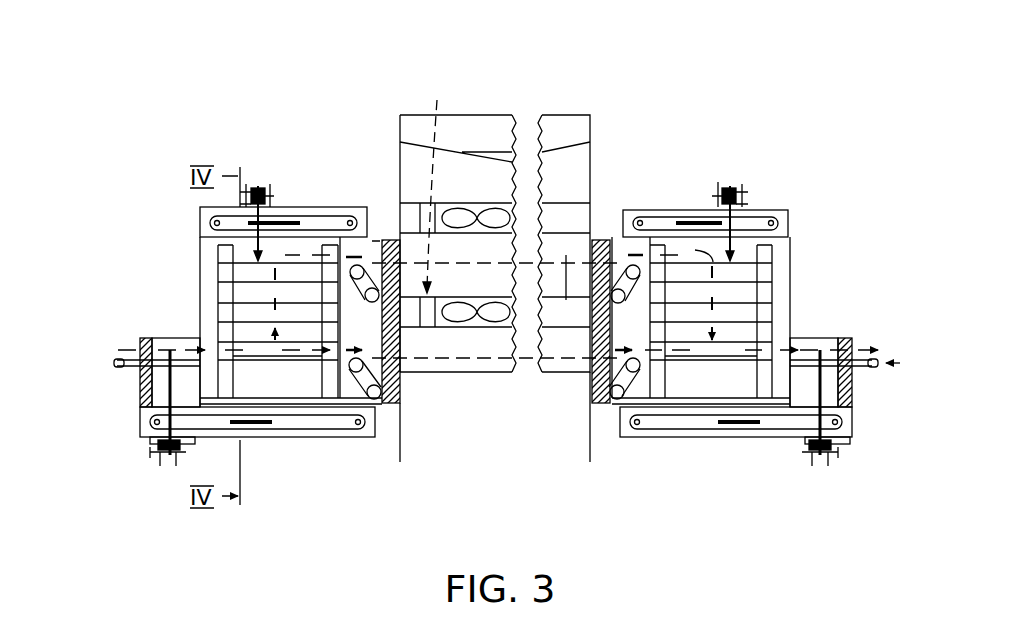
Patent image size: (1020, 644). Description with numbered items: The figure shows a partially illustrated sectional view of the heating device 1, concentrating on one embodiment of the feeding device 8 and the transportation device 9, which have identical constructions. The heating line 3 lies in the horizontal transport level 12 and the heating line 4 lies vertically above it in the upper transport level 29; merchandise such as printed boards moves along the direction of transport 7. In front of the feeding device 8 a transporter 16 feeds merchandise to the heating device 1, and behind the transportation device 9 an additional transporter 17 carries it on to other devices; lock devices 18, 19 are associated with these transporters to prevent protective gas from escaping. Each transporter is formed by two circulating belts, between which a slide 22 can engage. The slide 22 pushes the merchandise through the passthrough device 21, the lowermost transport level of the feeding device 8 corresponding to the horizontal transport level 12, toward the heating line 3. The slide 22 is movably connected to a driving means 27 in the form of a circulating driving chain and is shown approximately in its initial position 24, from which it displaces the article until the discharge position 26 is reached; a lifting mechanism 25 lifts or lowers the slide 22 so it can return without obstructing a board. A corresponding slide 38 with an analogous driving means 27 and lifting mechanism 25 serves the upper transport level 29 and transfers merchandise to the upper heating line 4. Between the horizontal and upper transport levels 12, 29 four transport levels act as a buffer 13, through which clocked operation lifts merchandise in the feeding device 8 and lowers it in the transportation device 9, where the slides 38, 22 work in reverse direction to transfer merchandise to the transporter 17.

The heating device 1 is at (541, 70).
The heating line 3 is at (565, 352).
The heating line 4 is at (566, 256).
The direction of transport 7 is at (200, 350).
The feeding device 8 is at (254, 132).
The transportation device 9 is at (730, 180).
The horizontal transport level 12 is at (473, 376).
The buffer 13 is at (218, 276).
The transporter 16 is at (112, 363).
The transporter 17 is at (880, 363).
The lock device 18 is at (150, 338).
The lock device 19 is at (838, 338).
The passthrough device 21 is at (290, 358).
The slide 22 is at (141, 386).
The initial position 24 is at (596, 442).
The lifting mechanism 25 is at (262, 180).
The discharge position 26 is at (372, 442).
The driving means 27 is at (329, 207).
The upper transport level 29 is at (437, 184).
The slide 38 is at (262, 254).